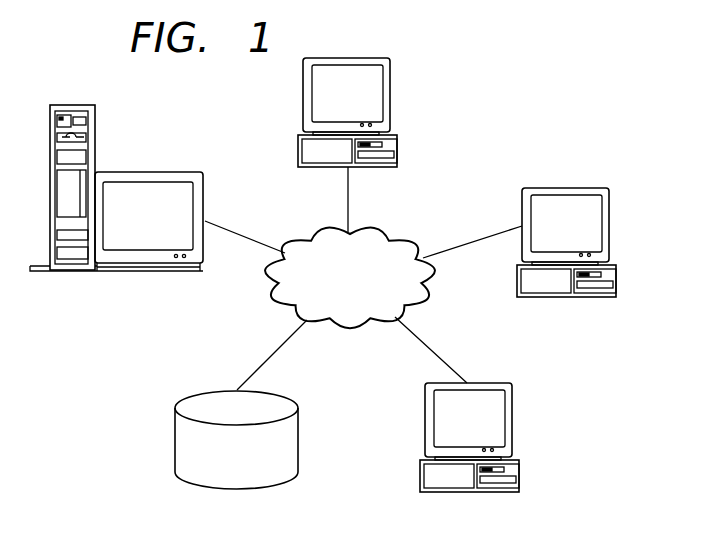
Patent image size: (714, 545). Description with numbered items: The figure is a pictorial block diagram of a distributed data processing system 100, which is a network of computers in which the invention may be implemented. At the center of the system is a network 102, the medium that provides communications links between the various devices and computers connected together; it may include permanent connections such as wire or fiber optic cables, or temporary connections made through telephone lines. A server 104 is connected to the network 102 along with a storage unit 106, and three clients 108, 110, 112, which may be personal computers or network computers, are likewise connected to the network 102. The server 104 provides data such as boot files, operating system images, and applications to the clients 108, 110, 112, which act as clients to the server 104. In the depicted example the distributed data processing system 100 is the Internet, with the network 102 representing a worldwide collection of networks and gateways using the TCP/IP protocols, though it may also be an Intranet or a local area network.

The distributed data processing system 100 is at (523, 88).
The network 102 is at (370, 288).
The server 104 is at (148, 172).
The storage unit 106 is at (175, 440).
The client 108 is at (390, 95).
The client 110 is at (609, 225).
The client 112 is at (512, 420).